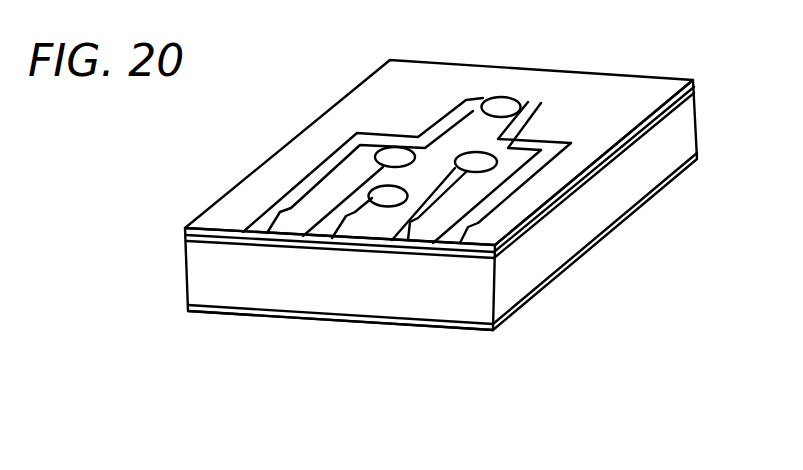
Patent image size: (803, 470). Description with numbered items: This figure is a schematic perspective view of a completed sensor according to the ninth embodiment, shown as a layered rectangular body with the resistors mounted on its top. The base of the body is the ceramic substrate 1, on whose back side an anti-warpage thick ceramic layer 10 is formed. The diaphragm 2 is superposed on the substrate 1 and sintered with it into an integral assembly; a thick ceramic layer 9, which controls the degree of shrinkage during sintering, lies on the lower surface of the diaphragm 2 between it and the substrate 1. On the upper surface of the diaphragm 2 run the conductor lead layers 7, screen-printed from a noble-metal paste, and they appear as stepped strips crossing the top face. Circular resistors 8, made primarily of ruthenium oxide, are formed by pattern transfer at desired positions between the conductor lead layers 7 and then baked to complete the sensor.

The substrate 1 is at (593, 237).
The diaphragm 2 is at (665, 87).
The conductor lead layers 7 is at (350, 195).
The resistors 8 is at (394, 152).
The thick ceramic layer 9 is at (630, 147).
The anti-warpage thick ceramic layer 10 is at (385, 322).